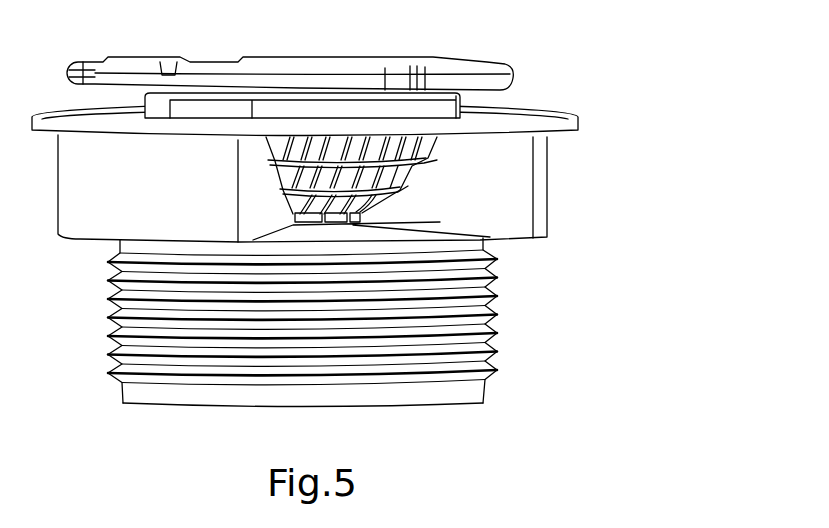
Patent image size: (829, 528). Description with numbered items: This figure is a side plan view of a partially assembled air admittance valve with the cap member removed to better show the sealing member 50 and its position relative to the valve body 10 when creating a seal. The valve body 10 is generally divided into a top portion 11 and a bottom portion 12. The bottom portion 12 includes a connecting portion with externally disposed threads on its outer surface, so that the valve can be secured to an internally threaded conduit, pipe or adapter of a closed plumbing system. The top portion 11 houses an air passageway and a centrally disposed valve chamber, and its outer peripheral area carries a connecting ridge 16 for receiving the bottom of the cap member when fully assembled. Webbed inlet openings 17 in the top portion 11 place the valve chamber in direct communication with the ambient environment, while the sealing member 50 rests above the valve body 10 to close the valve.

The valve body 10 is at (385, 322).
The top portion 11 is at (460, 198).
The bottom portion 12 is at (485, 362).
The connecting ridge 16 is at (570, 112).
The inlet openings 17 is at (437, 166).
The sealing member 50 is at (549, 83).